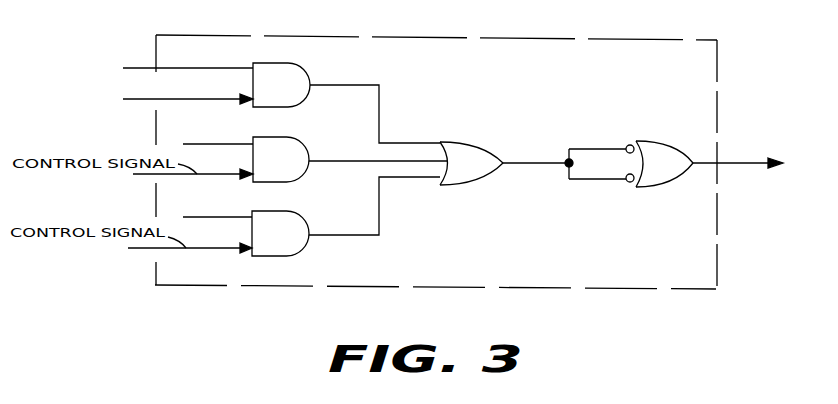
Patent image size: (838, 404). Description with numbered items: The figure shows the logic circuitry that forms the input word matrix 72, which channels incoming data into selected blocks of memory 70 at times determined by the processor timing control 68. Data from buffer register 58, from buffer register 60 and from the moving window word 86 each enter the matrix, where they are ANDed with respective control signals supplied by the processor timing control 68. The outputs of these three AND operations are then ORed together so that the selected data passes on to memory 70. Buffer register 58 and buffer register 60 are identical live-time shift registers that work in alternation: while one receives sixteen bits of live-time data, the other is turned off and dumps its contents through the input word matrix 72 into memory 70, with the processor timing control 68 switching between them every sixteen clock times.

The input word matrix 72 is at (415, 37).
The buffer register 60 is at (143, 67).
The buffer register 58 is at (195, 143).
The moving window word 86 is at (183, 216).
The processor timing control 68 is at (140, 99).
The memory 70 is at (731, 161).